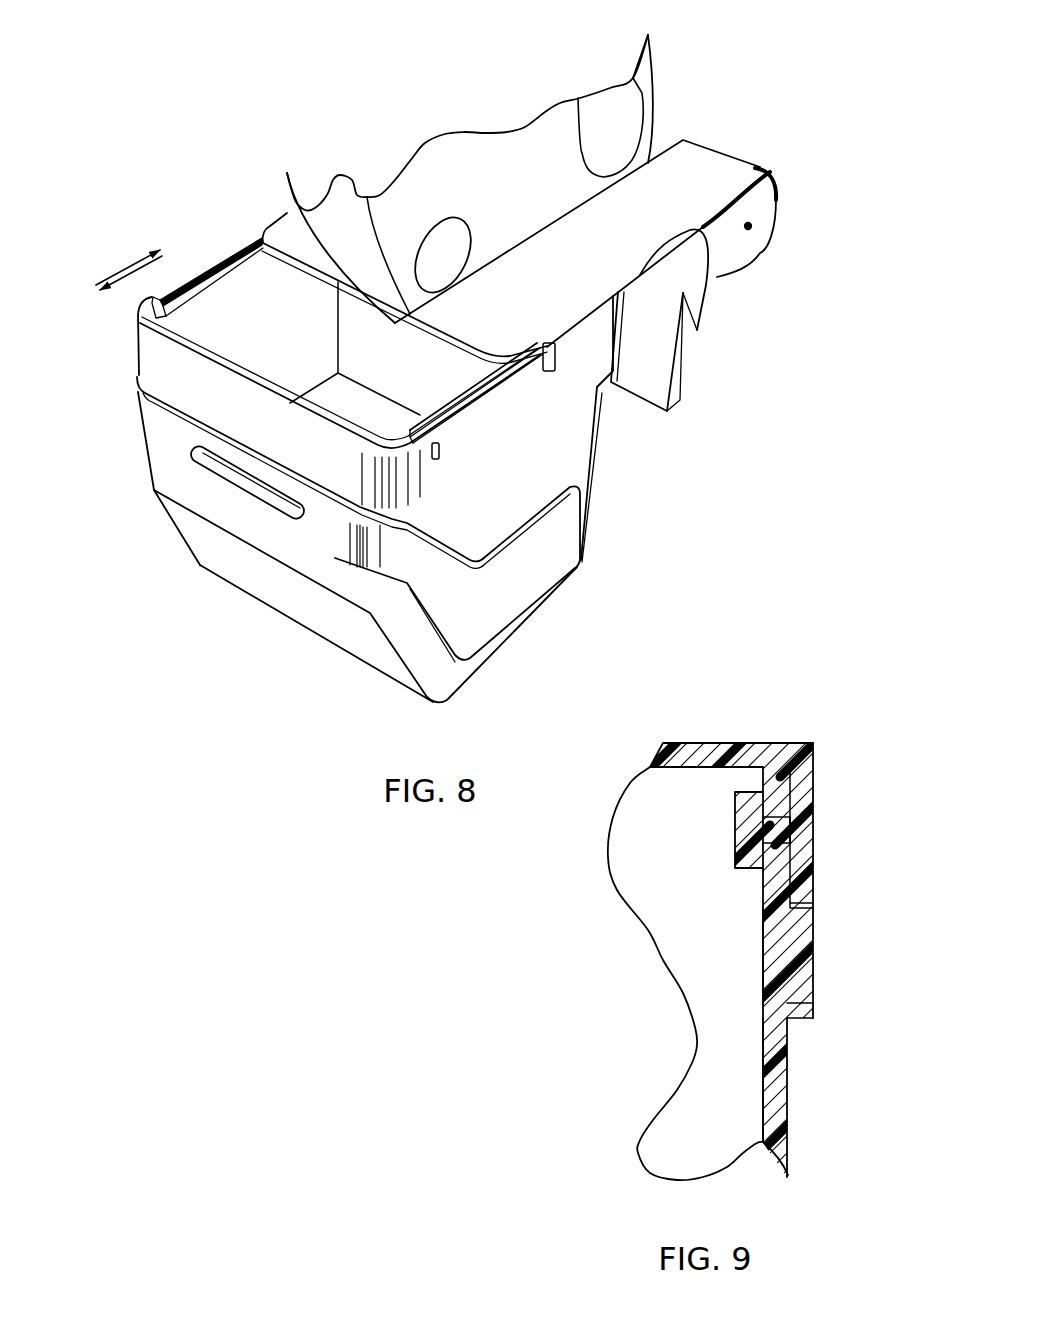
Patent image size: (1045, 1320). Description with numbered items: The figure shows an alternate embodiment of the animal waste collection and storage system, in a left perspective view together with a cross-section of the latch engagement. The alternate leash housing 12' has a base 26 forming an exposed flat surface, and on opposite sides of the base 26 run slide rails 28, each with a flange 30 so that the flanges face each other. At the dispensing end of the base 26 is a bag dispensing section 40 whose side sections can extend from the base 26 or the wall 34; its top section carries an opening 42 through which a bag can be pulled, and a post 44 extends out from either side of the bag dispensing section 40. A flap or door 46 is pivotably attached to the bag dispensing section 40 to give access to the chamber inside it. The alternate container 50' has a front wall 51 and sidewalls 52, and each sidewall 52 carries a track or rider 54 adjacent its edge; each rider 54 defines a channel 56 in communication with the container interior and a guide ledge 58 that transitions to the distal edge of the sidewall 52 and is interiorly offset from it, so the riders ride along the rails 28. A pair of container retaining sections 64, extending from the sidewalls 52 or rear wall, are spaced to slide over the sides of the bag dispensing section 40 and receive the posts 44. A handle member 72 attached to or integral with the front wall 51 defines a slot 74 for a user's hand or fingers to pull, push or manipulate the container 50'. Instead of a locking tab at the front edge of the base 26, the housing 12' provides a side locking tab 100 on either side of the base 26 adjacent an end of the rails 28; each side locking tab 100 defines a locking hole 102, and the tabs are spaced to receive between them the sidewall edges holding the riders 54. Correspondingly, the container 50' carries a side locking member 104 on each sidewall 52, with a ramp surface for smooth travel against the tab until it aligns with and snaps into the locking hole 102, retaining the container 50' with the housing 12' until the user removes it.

In FIG. 8, the alternate embodiment housing 12' is at (410, 179).
In FIG. 8, the base 26 is at (672, 183).
In FIG. 9, the base 26 is at (783, 742).
In FIG. 8, the slide rail 28 is at (567, 333).
In FIG. 9, the slide rail 28 is at (813, 770).
In FIG. 9, the flange 30 is at (783, 827).
In FIG. 8, the wall 34 is at (683, 380).
In FIG. 8, the bag dispensing section 40 is at (773, 178).
In FIG. 8, the opening 42 is at (672, 137).
In FIG. 8, the post 44 is at (753, 230).
In FIG. 8, the door 46 is at (773, 228).
In FIG. 8, the alternate container 50' is at (315, 547).
In FIG. 8, the front wall 51 is at (153, 360).
In FIG. 8, the sidewall 52 is at (570, 435).
In FIG. 9, the sidewall 52 is at (790, 1072).
In FIG. 8, the rider 54 is at (202, 297).
In FIG. 9, the rider 54 is at (737, 857).
In FIG. 9, the channel 56 is at (763, 817).
In FIG. 9, the guide ledge 58 is at (763, 778).
In FIG. 8, the container retaining section 64 is at (685, 277).
In FIG. 8, the handle member 72 is at (560, 540).
In FIG. 8, the slot 74 is at (187, 480).
In FIG. 8, the side locking tab 100 is at (547, 372).
In FIG. 9, the side locking tab 100 is at (813, 883).
In FIG. 9, the locking hole 102 is at (813, 1005).
In FIG. 8, the side locking member 104 is at (437, 455).
In FIG. 9, the side locking member 104 is at (813, 960).